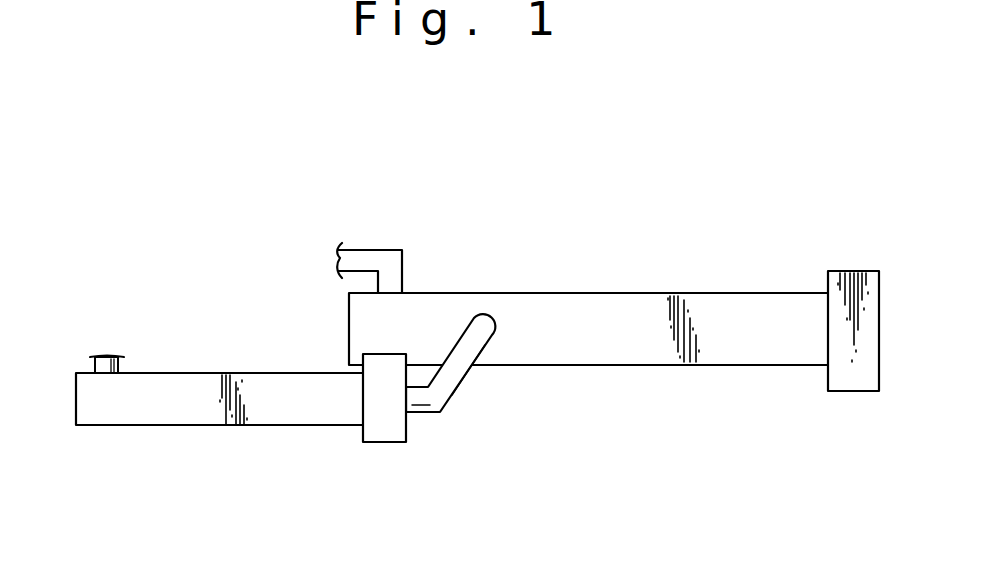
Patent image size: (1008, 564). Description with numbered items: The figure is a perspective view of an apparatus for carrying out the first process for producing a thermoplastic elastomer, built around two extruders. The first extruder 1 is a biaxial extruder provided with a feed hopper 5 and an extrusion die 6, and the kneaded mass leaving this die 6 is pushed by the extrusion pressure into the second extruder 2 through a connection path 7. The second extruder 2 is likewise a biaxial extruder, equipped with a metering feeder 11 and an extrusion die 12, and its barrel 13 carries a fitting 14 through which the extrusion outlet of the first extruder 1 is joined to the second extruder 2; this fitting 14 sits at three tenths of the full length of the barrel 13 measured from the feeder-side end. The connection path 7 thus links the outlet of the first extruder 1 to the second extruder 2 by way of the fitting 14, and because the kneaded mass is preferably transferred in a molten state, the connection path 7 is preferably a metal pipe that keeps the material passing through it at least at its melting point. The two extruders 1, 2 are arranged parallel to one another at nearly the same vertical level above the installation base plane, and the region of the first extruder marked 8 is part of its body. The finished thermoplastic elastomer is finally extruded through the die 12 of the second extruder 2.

The first extruder 1 is at (155, 432).
The second extruder 2 is at (604, 290).
The feed hopper 5 is at (93, 361).
The extrusion die 6 is at (387, 442).
The connection path 7 is at (462, 383).
The base member portion 8 is at (250, 372).
The metering feeder 11 is at (362, 250).
The extrusion die 12 is at (855, 391).
The barrel 13 is at (716, 293).
The fitting 14 is at (482, 320).